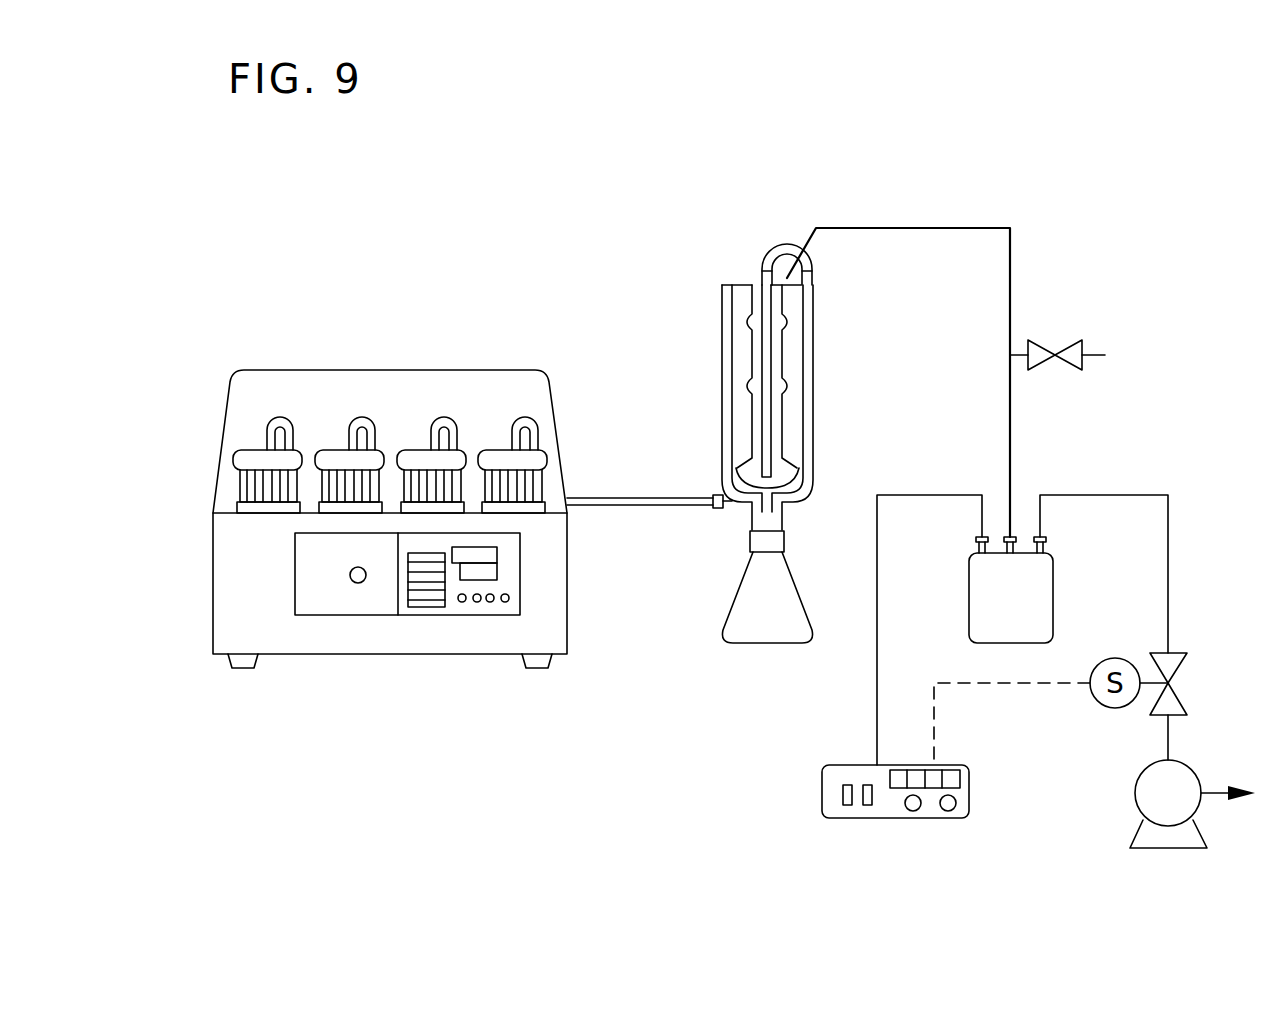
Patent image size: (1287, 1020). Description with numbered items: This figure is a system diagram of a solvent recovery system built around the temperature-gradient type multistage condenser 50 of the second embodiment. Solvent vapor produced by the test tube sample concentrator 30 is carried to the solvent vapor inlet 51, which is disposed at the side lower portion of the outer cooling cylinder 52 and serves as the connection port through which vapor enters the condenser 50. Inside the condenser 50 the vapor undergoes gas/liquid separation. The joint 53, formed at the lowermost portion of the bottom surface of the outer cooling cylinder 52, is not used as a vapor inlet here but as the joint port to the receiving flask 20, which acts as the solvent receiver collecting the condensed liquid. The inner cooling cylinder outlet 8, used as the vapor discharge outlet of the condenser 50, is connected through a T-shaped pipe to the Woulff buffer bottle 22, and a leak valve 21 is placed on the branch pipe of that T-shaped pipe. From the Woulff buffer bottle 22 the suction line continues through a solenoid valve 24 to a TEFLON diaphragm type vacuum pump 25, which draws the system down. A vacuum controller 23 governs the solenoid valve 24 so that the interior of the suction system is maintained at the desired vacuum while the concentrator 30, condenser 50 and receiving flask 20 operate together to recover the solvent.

The inner cooling cylinder outlet 8 is at (778, 269).
The receiving flask 20 is at (792, 577).
The leak valve 21 is at (1063, 350).
The Woulff buffer bottle 22 is at (1053, 577).
The vacuum controller 23 is at (970, 778).
The solenoid valve 24 is at (1182, 662).
The diaphragm type vacuum pump 25 is at (1197, 772).
The test tube sample concentrator 30 is at (448, 365).
The condenser 50 is at (802, 375).
The solvent vapor inlet 51 is at (727, 502).
The outer cooling cylinder 52 is at (813, 428).
The joint 53 is at (772, 522).